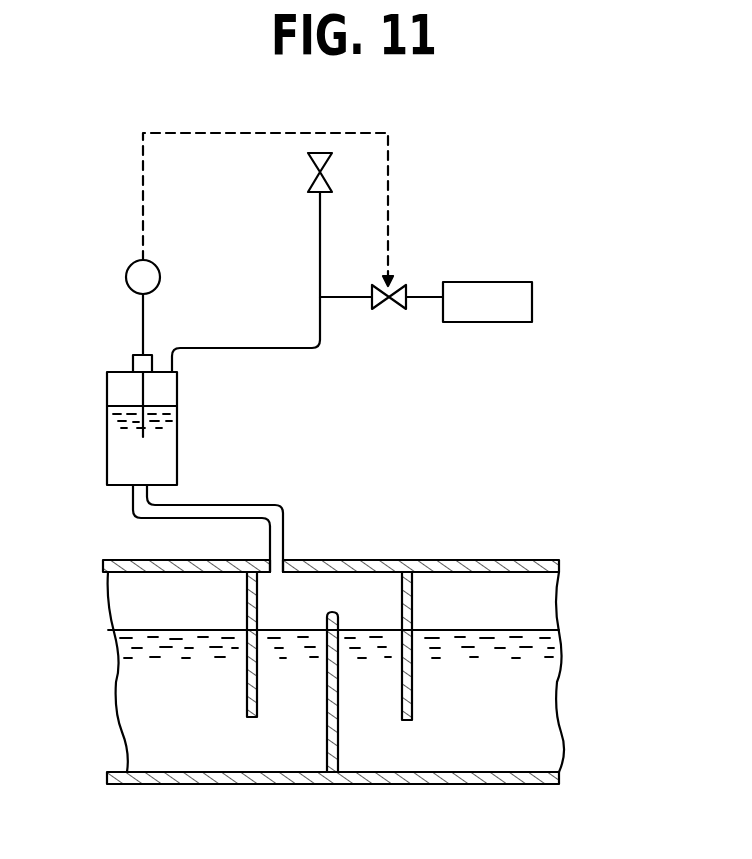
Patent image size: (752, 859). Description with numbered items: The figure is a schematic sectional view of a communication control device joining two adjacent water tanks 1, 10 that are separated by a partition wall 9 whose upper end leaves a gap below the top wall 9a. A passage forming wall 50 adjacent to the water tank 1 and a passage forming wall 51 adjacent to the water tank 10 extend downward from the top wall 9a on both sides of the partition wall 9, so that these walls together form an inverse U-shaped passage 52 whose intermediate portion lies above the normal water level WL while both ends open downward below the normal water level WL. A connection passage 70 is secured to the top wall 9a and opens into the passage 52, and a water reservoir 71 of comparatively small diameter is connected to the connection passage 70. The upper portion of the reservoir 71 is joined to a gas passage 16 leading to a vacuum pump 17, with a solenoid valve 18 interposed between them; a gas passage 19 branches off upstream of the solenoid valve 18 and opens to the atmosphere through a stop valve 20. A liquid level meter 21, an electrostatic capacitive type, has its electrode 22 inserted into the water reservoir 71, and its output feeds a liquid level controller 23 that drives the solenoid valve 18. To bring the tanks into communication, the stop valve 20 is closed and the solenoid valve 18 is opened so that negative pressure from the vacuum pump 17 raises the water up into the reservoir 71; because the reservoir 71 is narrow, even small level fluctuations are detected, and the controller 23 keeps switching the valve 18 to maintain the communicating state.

The water tank 1 is at (256, 755).
The partition wall 9 is at (340, 742).
The top wall 9a is at (458, 562).
The water tank 10 is at (437, 755).
The gas passage 16 is at (291, 350).
The vacuum pump 17 is at (518, 282).
The solenoid valve 18 is at (400, 284).
The gas passage 19 is at (319, 238).
The stop valve 20 is at (308, 169).
The liquid level meter 21 is at (128, 362).
The electrode 22 is at (120, 397).
The liquid level controller 23 is at (160, 277).
The passage forming wall 50 is at (247, 603).
The passage forming wall 51 is at (412, 600).
The inverse U-shaped passage 52 is at (343, 584).
The connection passage 70 is at (283, 508).
The water reservoir 71 is at (107, 465).
The normal water level WL is at (492, 624).